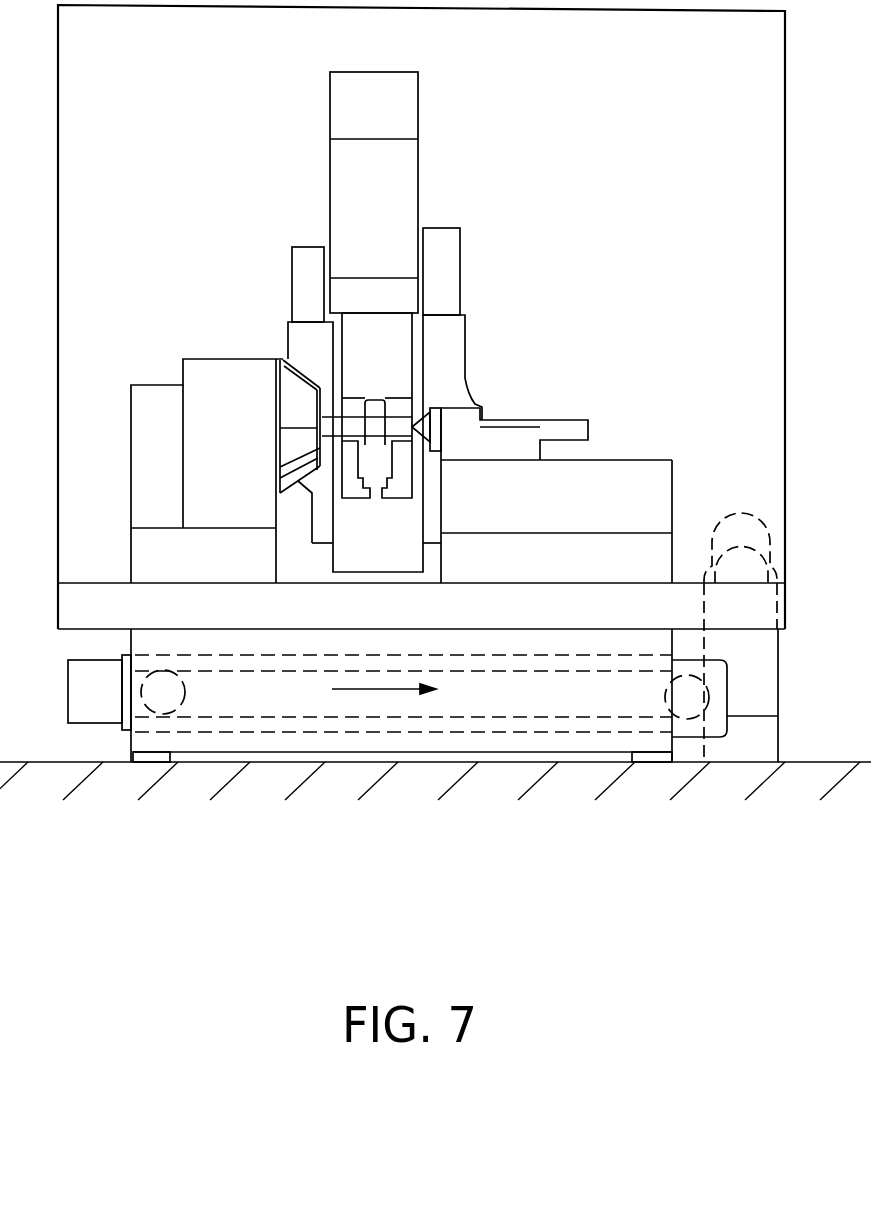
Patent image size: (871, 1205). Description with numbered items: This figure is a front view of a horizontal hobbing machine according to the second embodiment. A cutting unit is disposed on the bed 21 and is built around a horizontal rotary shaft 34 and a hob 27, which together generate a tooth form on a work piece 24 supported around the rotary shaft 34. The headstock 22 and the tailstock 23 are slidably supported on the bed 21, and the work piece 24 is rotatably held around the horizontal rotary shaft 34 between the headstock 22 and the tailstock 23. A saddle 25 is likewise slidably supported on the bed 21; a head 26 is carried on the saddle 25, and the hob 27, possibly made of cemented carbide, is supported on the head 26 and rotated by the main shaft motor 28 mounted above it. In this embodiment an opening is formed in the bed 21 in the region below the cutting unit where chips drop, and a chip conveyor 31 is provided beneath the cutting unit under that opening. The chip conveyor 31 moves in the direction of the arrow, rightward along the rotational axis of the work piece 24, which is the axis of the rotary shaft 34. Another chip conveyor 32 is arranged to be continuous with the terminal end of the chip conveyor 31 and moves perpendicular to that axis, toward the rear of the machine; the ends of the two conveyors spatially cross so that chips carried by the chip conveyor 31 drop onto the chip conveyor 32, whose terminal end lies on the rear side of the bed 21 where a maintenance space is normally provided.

The bed 21 is at (90, 613).
The headstock 22 is at (227, 390).
The tailstock 23 is at (517, 445).
The work piece 24 is at (378, 420).
The saddle 25 is at (445, 347).
The head 26 is at (387, 337).
The hob 27 is at (377, 467).
The main shaft motor 28 is at (395, 119).
The chip conveyor 31 is at (498, 720).
The chip conveyor 32 is at (758, 687).
The horizontal rotary shaft 34 is at (352, 430).